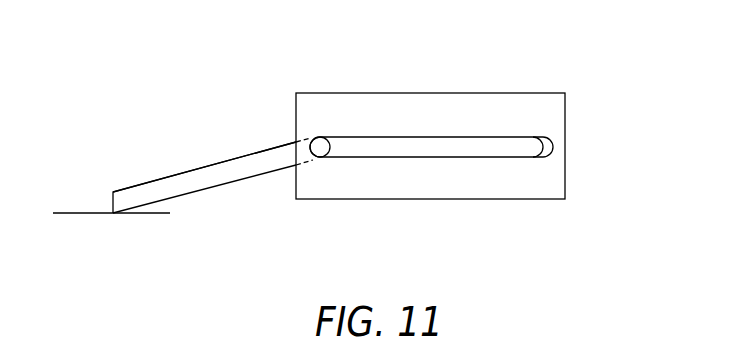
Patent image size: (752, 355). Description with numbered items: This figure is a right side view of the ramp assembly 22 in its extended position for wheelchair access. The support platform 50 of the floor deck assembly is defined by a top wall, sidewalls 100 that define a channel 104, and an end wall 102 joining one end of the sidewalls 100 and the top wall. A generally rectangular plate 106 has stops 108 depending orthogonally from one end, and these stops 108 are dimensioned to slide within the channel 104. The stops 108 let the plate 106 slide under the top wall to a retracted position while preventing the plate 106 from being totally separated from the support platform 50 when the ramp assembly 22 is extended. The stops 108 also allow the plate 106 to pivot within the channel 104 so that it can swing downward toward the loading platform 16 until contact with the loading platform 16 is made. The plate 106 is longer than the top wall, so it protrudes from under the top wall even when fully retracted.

The loading platform 16 is at (70, 215).
The ramp assembly 22 is at (278, 120).
The support platform 50 is at (489, 80).
The sidewalls 100 is at (437, 127).
The end wall 102 is at (567, 117).
The channel 104 is at (528, 150).
The plate 106 is at (145, 182).
The stops 108 is at (322, 157).